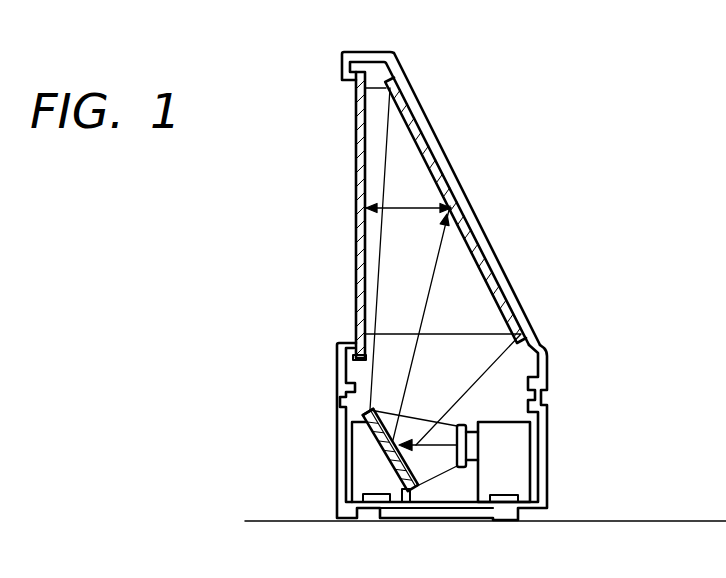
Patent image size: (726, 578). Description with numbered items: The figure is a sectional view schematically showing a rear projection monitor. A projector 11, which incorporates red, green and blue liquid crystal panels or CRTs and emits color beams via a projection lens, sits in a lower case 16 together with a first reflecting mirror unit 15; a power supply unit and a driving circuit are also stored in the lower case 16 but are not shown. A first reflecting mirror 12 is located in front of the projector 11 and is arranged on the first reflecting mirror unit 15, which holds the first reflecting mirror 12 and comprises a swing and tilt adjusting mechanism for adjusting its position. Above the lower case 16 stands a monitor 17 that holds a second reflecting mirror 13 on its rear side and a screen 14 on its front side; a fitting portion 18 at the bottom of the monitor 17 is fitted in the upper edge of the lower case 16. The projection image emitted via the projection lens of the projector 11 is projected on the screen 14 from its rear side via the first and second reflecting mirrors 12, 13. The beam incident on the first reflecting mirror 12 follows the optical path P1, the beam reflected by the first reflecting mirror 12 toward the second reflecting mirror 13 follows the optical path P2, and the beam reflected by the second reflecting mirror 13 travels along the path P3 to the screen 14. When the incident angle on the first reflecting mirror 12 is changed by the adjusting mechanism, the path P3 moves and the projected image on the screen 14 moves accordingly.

The projector 11 is at (520, 462).
The first reflecting mirror 12 is at (418, 450).
The second reflecting mirror 13 is at (470, 228).
The screen 14 is at (356, 150).
The first reflecting mirror unit 15 is at (363, 467).
The lower case 16 is at (366, 418).
The monitor 17 is at (382, 52).
The fitting portion 18 is at (552, 388).
The optical path P1 is at (424, 437).
The optical path P2 is at (443, 277).
The path P3 is at (408, 203).